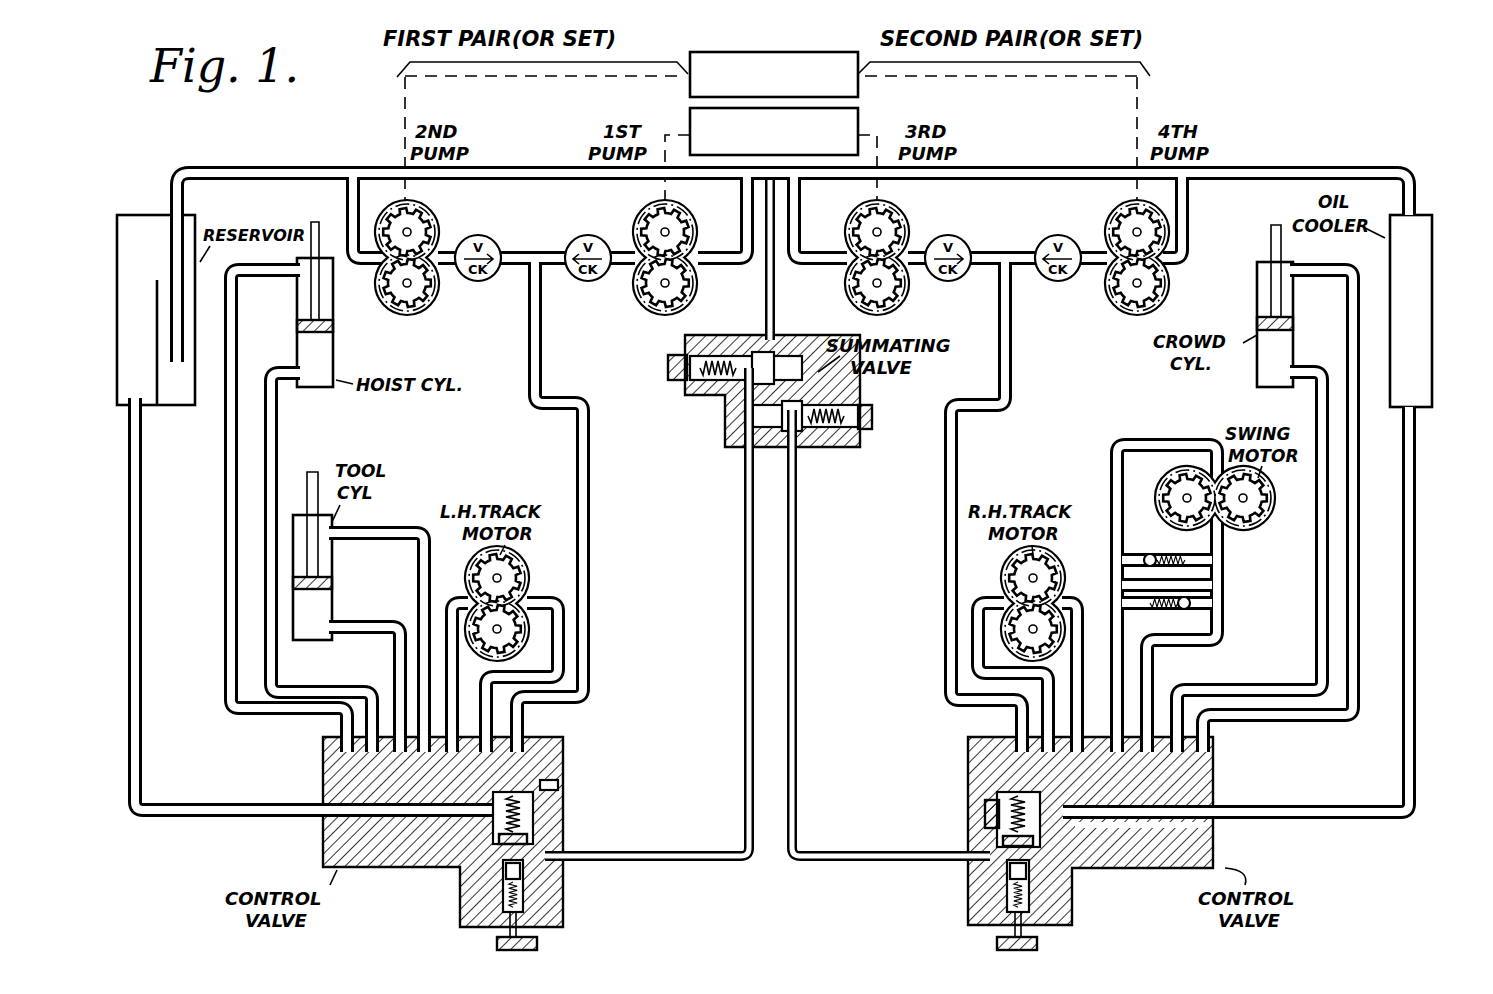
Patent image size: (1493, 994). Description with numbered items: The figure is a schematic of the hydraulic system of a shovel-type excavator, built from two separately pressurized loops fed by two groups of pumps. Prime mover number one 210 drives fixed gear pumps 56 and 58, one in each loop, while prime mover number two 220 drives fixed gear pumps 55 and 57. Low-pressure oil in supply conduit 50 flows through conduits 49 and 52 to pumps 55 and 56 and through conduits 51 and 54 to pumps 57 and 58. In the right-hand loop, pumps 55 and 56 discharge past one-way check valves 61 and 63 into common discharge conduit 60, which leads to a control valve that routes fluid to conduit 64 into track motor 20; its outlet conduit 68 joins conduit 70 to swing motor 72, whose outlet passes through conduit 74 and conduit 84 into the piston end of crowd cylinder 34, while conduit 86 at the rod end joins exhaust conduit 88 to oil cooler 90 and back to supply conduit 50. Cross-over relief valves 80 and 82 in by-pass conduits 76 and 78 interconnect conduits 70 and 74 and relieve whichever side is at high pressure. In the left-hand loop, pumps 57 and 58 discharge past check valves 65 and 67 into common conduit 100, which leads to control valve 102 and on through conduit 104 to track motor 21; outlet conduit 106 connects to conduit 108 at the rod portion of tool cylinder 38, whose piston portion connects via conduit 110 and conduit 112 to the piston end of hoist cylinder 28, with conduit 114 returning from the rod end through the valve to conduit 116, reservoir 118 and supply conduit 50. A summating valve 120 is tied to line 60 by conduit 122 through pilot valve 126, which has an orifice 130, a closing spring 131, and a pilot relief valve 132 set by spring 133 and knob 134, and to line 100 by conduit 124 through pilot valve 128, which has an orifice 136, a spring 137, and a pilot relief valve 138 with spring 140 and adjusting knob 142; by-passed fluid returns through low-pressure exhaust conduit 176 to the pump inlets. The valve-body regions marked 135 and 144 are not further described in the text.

The track motor 20 is at (1050, 568).
The track motor 21 is at (525, 568).
The hoist cylinder 28 is at (332, 332).
The crowd cylinder 34 is at (1257, 352).
The tool cylinder 38 is at (332, 583).
The conduit 49 is at (1195, 215).
The supply conduit 50 is at (1015, 166).
The conduit 51 is at (355, 200).
The conduit 52 is at (819, 248).
The conduit 54 is at (710, 245).
The fixed gear pump 55 is at (1128, 300).
The fixed gear pump 56 is at (900, 222).
The fixed gear pump 57 is at (425, 305).
The fixed gear pump 58 is at (645, 222).
The common discharge conduit 60 is at (945, 657).
The one-way check valve 61 is at (1062, 240).
The one-way check valve 63 is at (958, 240).
The conduit 64 is at (985, 596).
The one-way check valve 65 is at (488, 283).
The one-way check valve 67 is at (592, 282).
The outlet conduit 68 is at (1078, 602).
The conduit 70 is at (1152, 442).
The swing motor 72 is at (1255, 525).
The conduit 74 is at (1218, 627).
The by-pass conduit 76 is at (1137, 557).
The by-pass conduit 78 is at (1134, 608).
The cross-over relief valve 80 is at (1155, 568).
The cross-over relief valve 82 is at (1180, 610).
The conduit 84 is at (1318, 578).
The conduit 86 is at (1352, 512).
The exhaust conduit 88 is at (1412, 497).
The oil cooler 90 is at (1420, 318).
The common discharge conduit 100 is at (586, 487).
The control valve 102 is at (308, 859).
The conduit 104 is at (556, 660).
The outlet conduit 106 is at (455, 590).
The conduit 108 is at (378, 540).
The conduit 110 is at (368, 640).
The conduit 112 is at (316, 696).
The conduit 114 is at (224, 695).
The exhaust conduit 116 is at (142, 486).
The reservoir 118 is at (143, 222).
The summating valve 120 is at (866, 386).
The conduit 122 is at (798, 546).
The conduit 124 is at (743, 546).
The pilot valve 126 is at (988, 810).
The pilot valve 128 is at (535, 808).
The orifice 130 is at (1012, 805).
The spring 131 is at (1000, 835).
The pilot relief valve 132 is at (1030, 870).
The spring 133 is at (1025, 892).
The knob 134 is at (1040, 943).
The valve body 135 is at (1072, 843).
The orifice 136 is at (558, 783).
The spring 137 is at (530, 838).
The pilot relief valve 138 is at (505, 870).
The spring 140 is at (505, 895).
The adjusting knob 142 is at (497, 943).
The valve passage 144 is at (460, 836).
The low-pressure exhaust conduit 176 is at (764, 306).
The prime mover No. 1 210 is at (690, 120).
The prime mover No. 2 220 is at (697, 52).